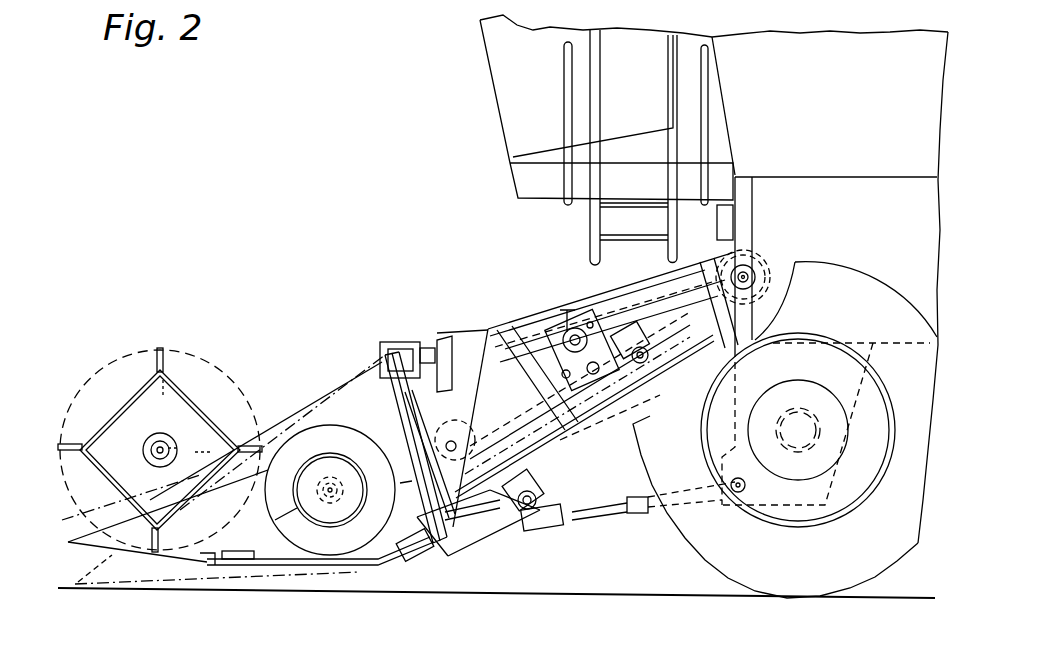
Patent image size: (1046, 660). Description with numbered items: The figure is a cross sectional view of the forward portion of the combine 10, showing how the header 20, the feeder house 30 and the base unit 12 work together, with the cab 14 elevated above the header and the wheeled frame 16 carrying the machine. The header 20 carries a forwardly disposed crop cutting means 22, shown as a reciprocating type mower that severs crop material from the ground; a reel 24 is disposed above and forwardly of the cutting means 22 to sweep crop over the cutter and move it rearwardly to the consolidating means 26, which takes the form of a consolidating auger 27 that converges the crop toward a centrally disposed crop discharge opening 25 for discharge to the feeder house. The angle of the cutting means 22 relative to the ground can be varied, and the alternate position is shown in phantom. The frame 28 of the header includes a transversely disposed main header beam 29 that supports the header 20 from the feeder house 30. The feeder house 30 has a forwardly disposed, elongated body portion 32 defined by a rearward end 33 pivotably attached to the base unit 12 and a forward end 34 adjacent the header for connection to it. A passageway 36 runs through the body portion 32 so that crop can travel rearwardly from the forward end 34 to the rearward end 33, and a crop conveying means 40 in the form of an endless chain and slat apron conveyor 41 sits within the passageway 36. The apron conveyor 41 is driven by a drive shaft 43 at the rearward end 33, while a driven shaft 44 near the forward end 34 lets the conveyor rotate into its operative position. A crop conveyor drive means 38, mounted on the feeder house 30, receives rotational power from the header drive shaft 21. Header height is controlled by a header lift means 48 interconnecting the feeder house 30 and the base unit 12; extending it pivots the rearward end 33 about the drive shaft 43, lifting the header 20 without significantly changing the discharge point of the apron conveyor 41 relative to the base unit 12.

The combine 10 is at (384, 93).
The base unit 12 is at (822, 35).
The cab 14 is at (538, 28).
The wheeled frame 16 is at (878, 284).
The crop gathering header 20 is at (292, 344).
The header drive shaft 21 is at (468, 540).
The crop cutting means 22 is at (205, 560).
The reel 24 is at (160, 352).
The crop discharge opening 25 is at (395, 412).
The consolidating means 26 is at (303, 398).
The consolidating auger 27 is at (328, 424).
The frame 28 is at (398, 556).
The main header beam 29 is at (393, 345).
The feeder house 30 is at (578, 289).
The body portion 32 is at (603, 298).
The rearward end 33 is at (727, 253).
The forward end 34 is at (437, 333).
The passageway 36 is at (650, 392).
The crop conveyor drive means 38 is at (546, 482).
The crop conveying means 40 is at (592, 420).
The apron conveyor 41 is at (545, 350).
The drive shaft 43 is at (766, 270).
The driven shaft 44 is at (470, 394).
The header lift means 48 is at (592, 522).